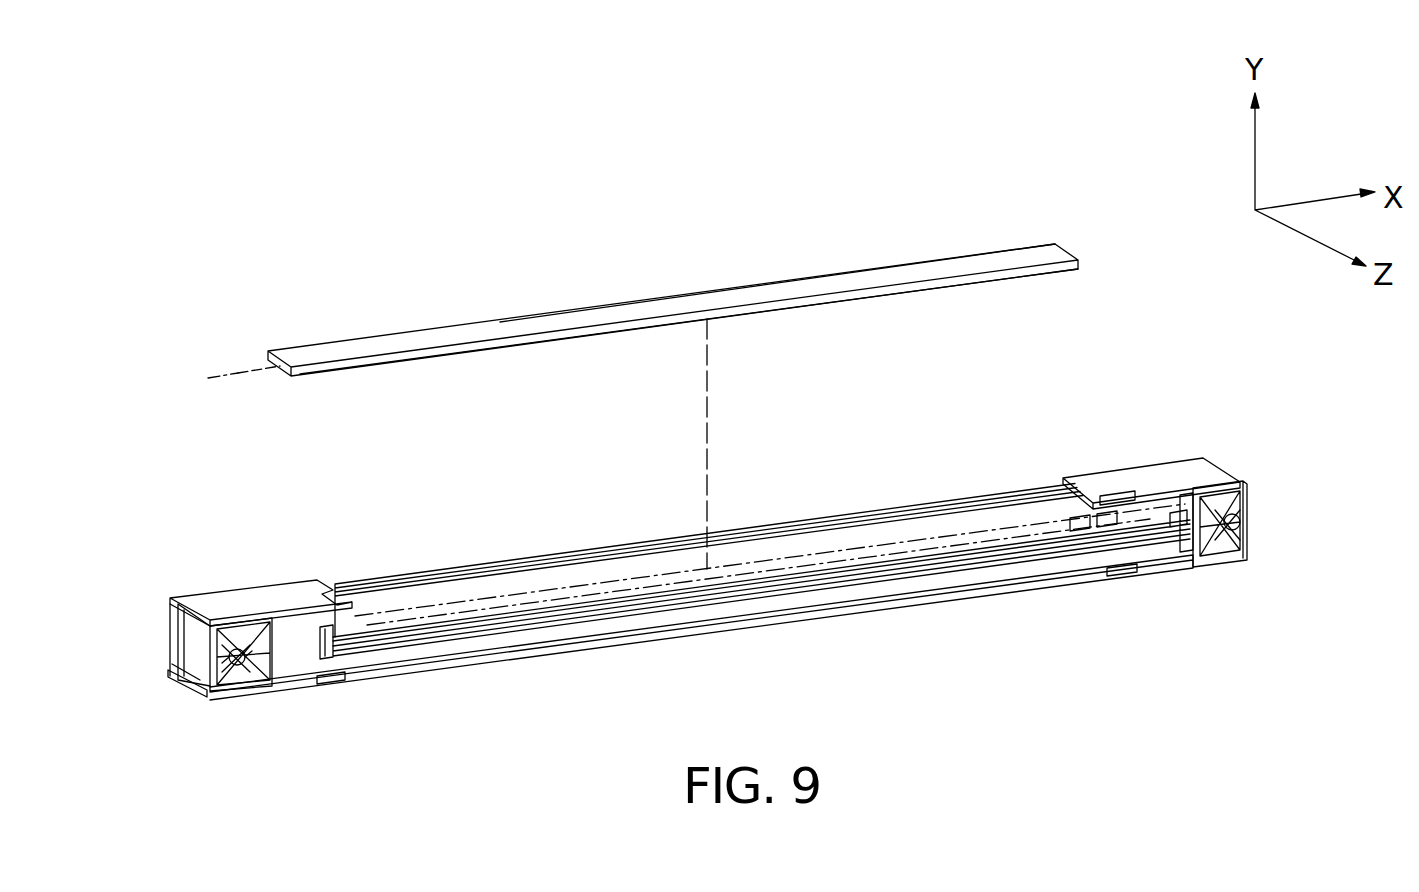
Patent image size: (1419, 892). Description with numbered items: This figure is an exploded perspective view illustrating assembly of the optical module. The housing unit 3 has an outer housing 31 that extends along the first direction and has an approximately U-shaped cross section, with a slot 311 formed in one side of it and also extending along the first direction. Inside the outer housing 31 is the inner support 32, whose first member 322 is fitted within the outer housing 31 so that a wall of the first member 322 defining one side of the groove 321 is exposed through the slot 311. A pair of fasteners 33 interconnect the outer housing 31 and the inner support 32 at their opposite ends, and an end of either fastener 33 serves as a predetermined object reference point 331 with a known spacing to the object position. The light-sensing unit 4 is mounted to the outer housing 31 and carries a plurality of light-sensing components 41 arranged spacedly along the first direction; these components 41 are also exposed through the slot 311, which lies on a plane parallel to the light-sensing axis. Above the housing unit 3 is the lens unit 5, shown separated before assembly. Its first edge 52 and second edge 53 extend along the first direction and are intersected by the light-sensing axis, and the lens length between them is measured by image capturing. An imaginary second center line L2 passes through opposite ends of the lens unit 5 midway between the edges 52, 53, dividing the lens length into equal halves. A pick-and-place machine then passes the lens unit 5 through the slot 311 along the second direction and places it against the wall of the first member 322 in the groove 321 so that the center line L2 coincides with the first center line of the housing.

The housing unit 3 is at (207, 594).
The outer housing 31 is at (400, 680).
The slot 311 is at (518, 563).
The inner support 32 is at (185, 688).
The groove 321 is at (922, 575).
The first member 322 is at (615, 628).
The fasteners 33 is at (237, 665).
The predetermined object reference point 331 is at (250, 670).
The light-sensing unit 4 is at (411, 586).
The light-sensing components 41 is at (1078, 532).
The lens unit 5 is at (817, 278).
The first edge 52 is at (668, 300).
The second edge 53 is at (637, 323).
The imaginary second center line L2 is at (223, 376).